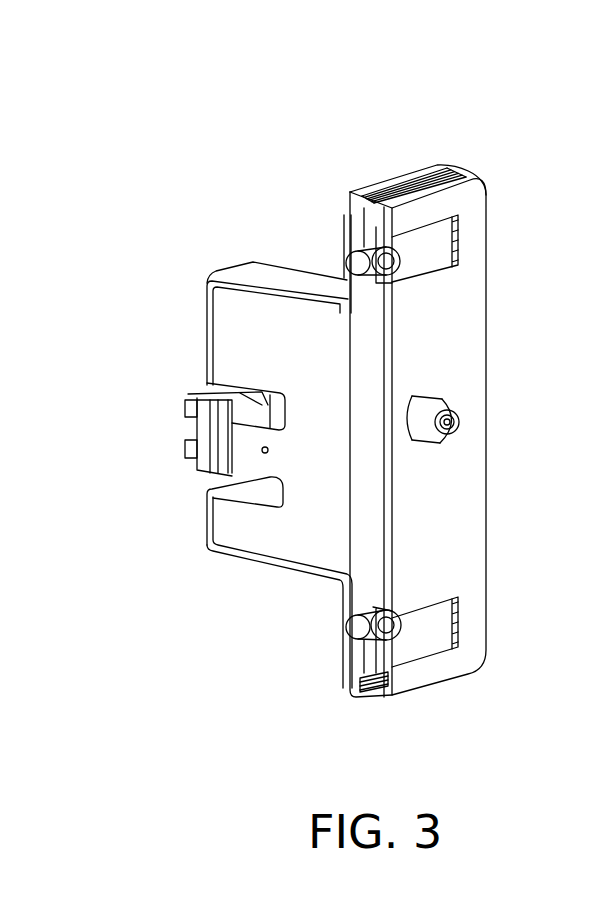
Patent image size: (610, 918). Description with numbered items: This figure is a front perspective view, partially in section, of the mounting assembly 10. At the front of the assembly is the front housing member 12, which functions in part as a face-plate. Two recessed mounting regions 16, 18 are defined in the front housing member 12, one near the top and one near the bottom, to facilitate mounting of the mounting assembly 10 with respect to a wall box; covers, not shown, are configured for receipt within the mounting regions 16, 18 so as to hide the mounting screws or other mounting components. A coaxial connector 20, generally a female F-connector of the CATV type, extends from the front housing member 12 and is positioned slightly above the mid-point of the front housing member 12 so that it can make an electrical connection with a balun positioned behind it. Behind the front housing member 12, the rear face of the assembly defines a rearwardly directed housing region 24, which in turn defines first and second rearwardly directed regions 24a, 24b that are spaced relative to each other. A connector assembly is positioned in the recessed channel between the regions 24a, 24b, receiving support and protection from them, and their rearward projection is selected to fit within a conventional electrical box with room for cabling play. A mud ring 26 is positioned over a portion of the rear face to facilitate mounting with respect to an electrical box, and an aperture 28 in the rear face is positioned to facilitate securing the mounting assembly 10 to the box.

The mounting assembly 10 is at (488, 122).
The front housing member 12 is at (470, 297).
The recessed mounting region 16 is at (437, 242).
The recessed mounting region 18 is at (437, 623).
The coaxial connector 20 is at (432, 403).
The housing region 24 is at (278, 281).
The first rearwardly directed region 24a is at (237, 339).
The second rearwardly directed region 24b is at (253, 535).
The mud ring 26 is at (343, 660).
The aperture 28 is at (343, 610).